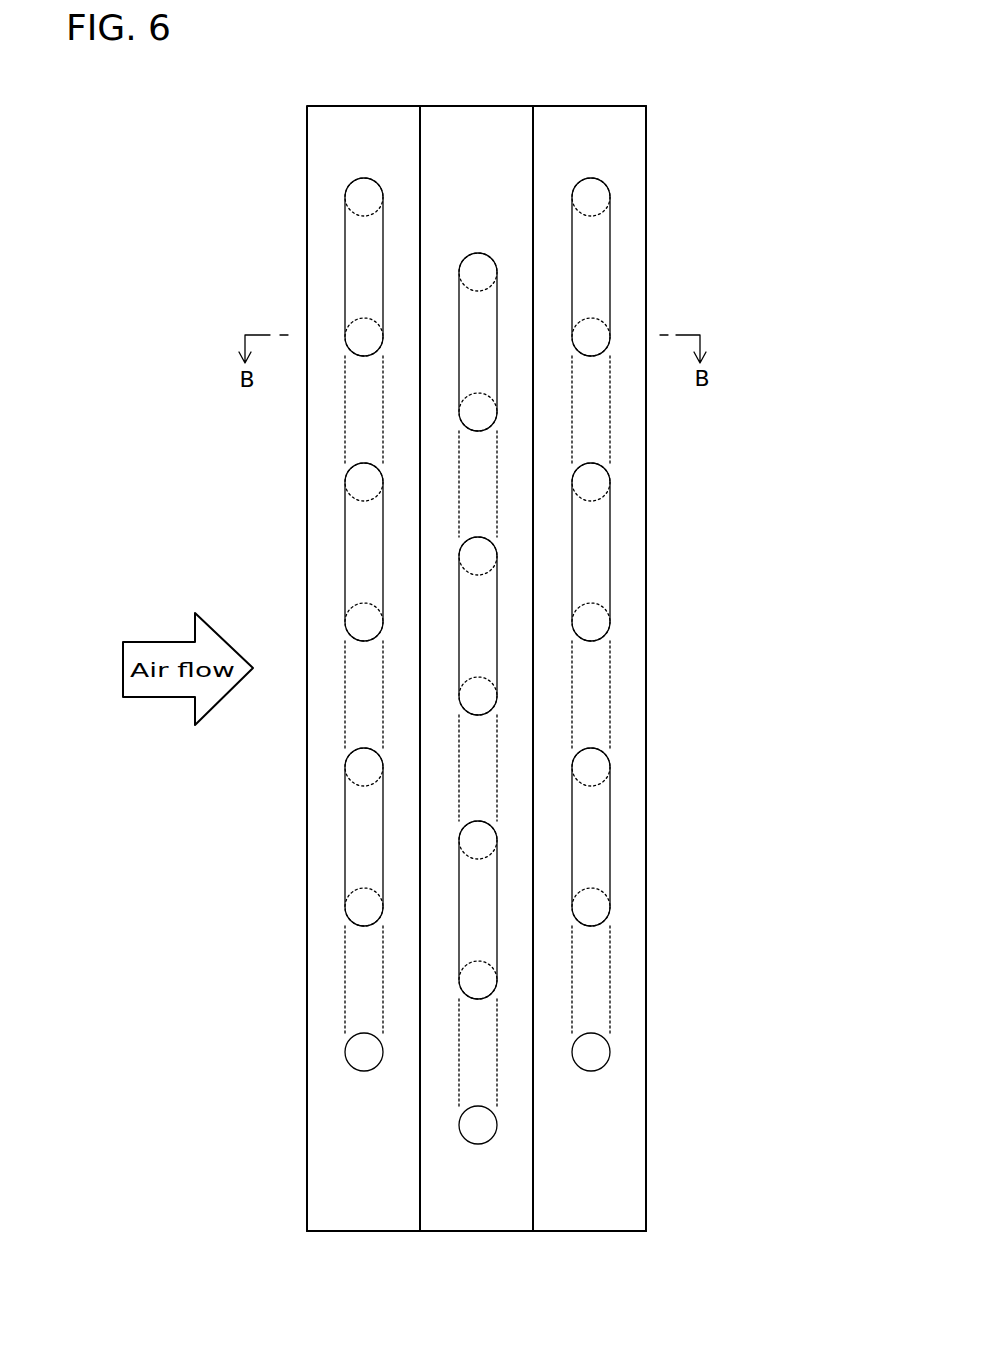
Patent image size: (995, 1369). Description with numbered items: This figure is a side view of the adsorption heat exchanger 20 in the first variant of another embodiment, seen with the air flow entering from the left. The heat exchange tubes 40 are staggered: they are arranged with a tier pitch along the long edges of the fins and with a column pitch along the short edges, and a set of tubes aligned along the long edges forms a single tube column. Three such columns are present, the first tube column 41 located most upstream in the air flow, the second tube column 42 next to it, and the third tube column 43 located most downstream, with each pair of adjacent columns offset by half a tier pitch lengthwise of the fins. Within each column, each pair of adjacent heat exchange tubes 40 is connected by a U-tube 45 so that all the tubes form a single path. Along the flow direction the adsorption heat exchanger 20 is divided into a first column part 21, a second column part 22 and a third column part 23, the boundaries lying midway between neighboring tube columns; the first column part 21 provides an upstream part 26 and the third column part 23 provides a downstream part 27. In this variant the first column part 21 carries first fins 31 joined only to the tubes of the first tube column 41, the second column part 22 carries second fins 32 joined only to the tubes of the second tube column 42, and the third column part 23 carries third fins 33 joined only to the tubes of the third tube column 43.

The adsorption heat exchanger 20 is at (222, 126).
The first column part 21 is at (363, 104).
The second column part 22 is at (476, 104).
The third column part 23 is at (594, 104).
The upstream part 26 is at (334, 1197).
The downstream part 27 is at (622, 1197).
The first fins 31 is at (363, 1231).
The second fins 32 is at (477, 1231).
The third fins 33 is at (597, 1231).
The heat exchange tubes 40 is at (364, 178).
The first tube column 41 is at (365, 1075).
The second tube column 42 is at (478, 1148).
The third tube column 43 is at (592, 1075).
The U-tube 45 is at (356, 244).